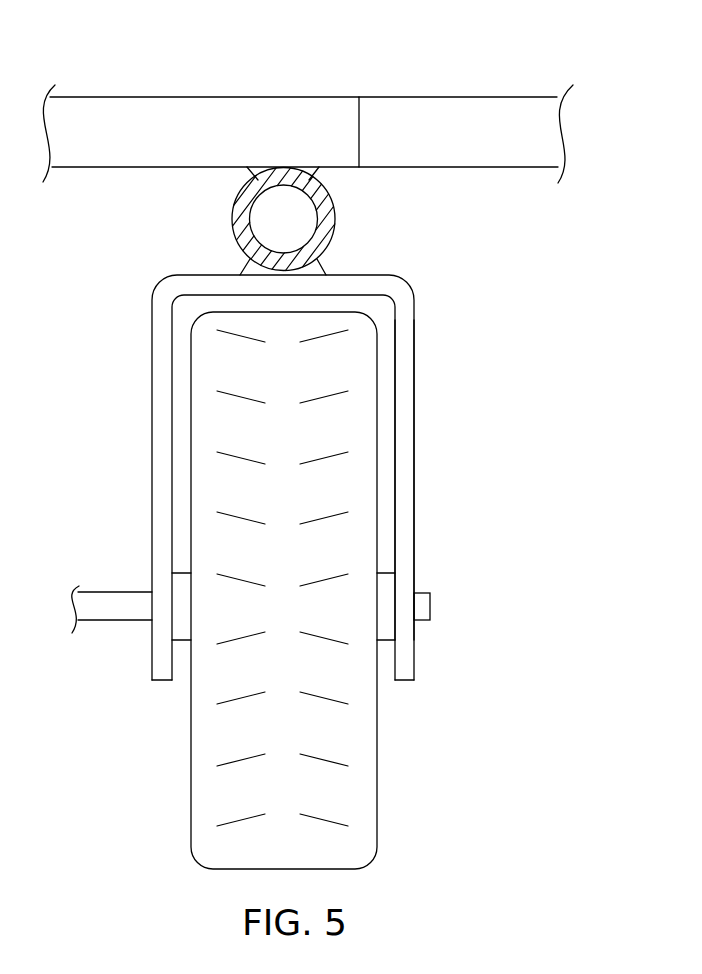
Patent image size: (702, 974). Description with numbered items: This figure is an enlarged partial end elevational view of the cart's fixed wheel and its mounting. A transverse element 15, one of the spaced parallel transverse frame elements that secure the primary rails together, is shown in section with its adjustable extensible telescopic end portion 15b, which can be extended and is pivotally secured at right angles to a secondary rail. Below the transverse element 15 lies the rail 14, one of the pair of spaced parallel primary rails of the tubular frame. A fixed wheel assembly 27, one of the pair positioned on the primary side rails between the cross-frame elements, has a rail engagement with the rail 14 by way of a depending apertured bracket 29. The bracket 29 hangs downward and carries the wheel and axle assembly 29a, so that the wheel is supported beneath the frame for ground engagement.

The transverse element 15 is at (222, 122).
The telescopic end portion 15b is at (420, 46).
The rail 14 is at (232, 212).
The fixed wheel assembly 27 is at (329, 553).
The apertured bracket 29 is at (281, 477).
The wheel and axle assembly 29a is at (384, 564).